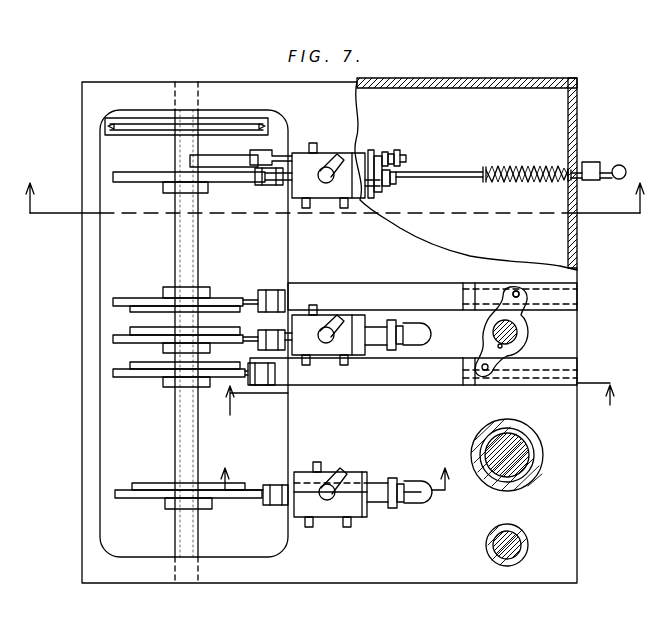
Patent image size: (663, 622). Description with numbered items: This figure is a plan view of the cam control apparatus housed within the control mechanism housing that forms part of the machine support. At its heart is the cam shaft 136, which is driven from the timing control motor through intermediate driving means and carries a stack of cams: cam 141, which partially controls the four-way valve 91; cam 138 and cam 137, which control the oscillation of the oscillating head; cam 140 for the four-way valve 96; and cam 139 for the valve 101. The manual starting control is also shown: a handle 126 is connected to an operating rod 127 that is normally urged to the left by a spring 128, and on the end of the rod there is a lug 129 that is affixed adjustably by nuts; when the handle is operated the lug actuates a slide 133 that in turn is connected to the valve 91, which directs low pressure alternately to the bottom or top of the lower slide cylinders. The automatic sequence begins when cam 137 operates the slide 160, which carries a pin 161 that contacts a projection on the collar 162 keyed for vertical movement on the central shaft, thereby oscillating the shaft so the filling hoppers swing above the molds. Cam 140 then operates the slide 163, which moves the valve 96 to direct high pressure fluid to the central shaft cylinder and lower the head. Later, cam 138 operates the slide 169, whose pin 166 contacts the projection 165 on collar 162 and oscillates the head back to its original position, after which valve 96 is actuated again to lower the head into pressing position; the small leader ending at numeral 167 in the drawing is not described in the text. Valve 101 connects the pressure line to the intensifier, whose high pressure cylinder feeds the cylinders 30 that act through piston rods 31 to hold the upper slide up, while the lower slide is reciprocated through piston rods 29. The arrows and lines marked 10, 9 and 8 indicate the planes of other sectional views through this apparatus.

The cam 141 is at (113, 172).
The cam shaft 136 is at (190, 247).
The cam 138 is at (145, 262).
The cam 140 is at (120, 340).
The cam 137 is at (148, 370).
The cam 139 is at (167, 490).
The section line 10- 10 is at (331, 212).
The section line 9- 9 is at (418, 411).
The section line 8- 8 is at (332, 495).
The four-way valve 91 is at (337, 146).
The lug 129 is at (382, 152).
The slide 133 is at (388, 186).
The operating rod 127 is at (443, 170).
The spring 128 is at (548, 166).
The handle 126 is at (648, 140).
The pin 166 is at (517, 292).
The slide 169 is at (405, 270).
The slide 160 is at (320, 372).
The slide 163 is at (290, 334).
The four-way valve 96 is at (352, 360).
The collar 162 is at (520, 338).
The projection 165 is at (528, 318).
The pivot pin 167 is at (487, 375).
The pin 161 is at (505, 362).
The valve 101 is at (333, 527).
The piston rods 31 is at (525, 458).
The cylinders 30 is at (541, 465).
The piston rods 29 is at (528, 546).